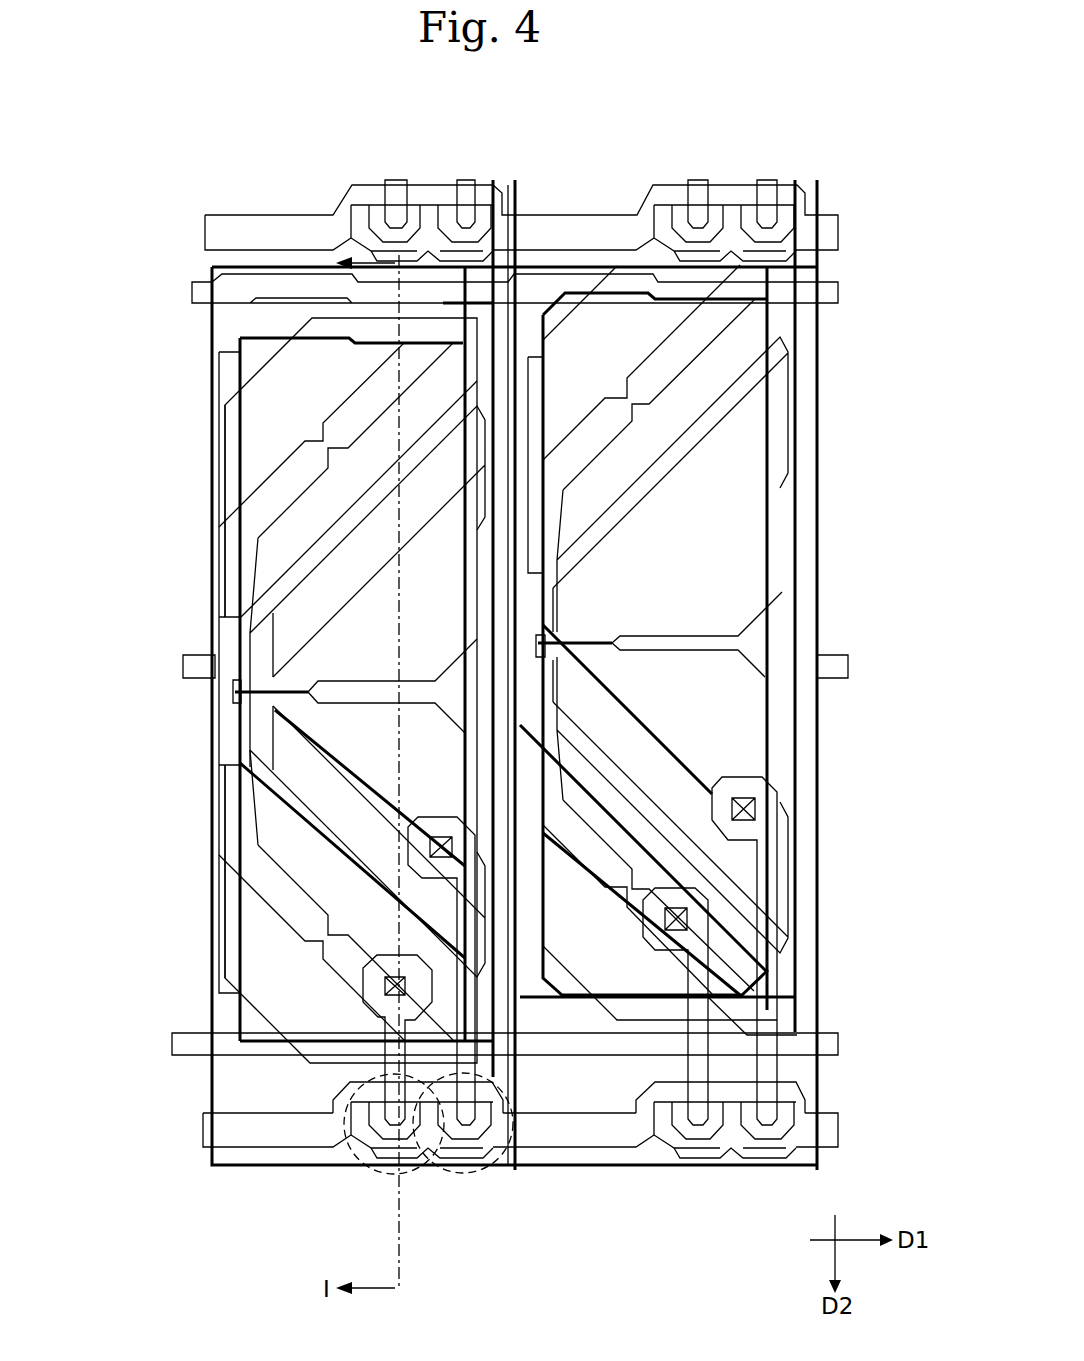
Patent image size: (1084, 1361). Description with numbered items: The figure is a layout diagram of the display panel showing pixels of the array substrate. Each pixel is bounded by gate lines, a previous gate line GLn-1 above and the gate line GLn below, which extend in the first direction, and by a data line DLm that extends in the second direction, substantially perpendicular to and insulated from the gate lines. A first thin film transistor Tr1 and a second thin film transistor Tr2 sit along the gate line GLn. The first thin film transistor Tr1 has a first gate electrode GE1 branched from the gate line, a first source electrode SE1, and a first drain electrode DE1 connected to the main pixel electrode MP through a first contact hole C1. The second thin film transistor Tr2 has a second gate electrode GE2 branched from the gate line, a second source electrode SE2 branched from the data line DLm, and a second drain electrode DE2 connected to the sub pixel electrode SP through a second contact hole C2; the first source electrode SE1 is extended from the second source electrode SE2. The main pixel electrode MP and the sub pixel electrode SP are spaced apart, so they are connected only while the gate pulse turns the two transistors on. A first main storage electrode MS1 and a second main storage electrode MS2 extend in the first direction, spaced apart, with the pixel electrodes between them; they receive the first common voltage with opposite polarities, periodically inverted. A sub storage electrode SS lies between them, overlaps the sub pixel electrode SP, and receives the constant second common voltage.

The gate line GLn-1 is at (205, 233).
The gate line GLn is at (203, 1128).
The first main storage electrode MS1 is at (192, 290).
The second main storage electrode MS2 is at (190, 1045).
The sub storage electrode SS is at (215, 469).
The sub pixel electrode SP is at (283, 745).
The main pixel electrode MP is at (258, 948).
The data line DLm is at (515, 1178).
The first gate electrode GE1 is at (360, 1072).
The second gate electrode GE2 is at (503, 1094).
The first source electrode SE1 is at (358, 1160).
The second source electrode SE2 is at (462, 1160).
The first drain electrode DE1 is at (378, 1020).
The second drain electrode DE2 is at (408, 847).
The first thin film transistor Tr1 is at (393, 1175).
The second thin film transistor Tr2 is at (440, 1172).
The first contact hole C1 is at (395, 980).
The second contact hole C2 is at (441, 840).